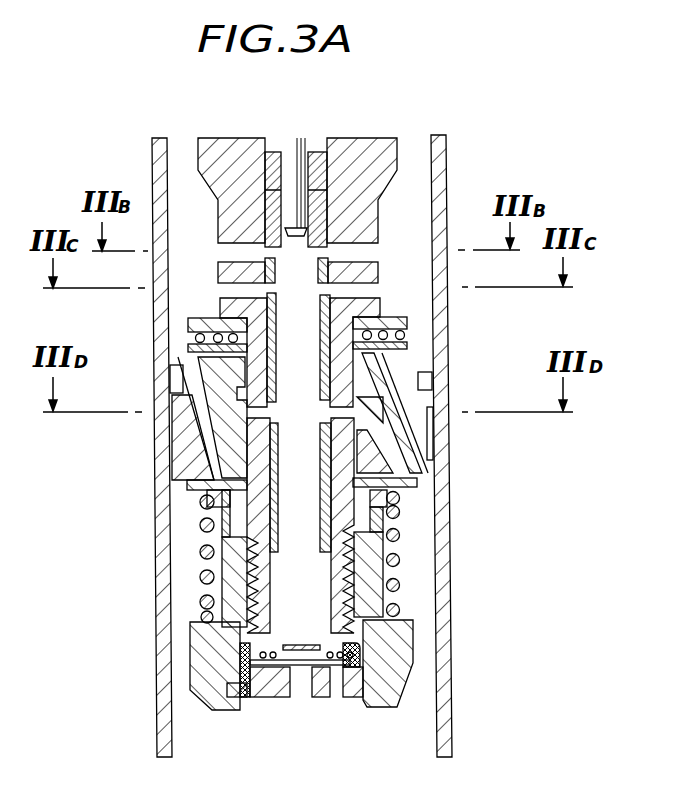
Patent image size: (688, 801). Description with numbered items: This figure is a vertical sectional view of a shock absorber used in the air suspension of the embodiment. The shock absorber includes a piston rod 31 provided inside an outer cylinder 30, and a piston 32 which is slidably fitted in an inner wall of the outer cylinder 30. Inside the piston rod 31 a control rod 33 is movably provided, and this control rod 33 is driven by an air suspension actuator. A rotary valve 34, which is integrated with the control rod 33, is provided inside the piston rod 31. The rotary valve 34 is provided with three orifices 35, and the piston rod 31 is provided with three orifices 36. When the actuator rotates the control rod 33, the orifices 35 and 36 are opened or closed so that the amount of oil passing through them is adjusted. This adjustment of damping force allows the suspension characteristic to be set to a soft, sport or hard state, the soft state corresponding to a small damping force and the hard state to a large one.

The outer cylinder 30 is at (442, 180).
The piston rod 31 is at (217, 190).
The piston 32 is at (210, 365).
The control rod 33 is at (300, 138).
The rotary valve 34 is at (375, 143).
The orifices 35 is at (275, 408).
The orifices 36 is at (342, 412).